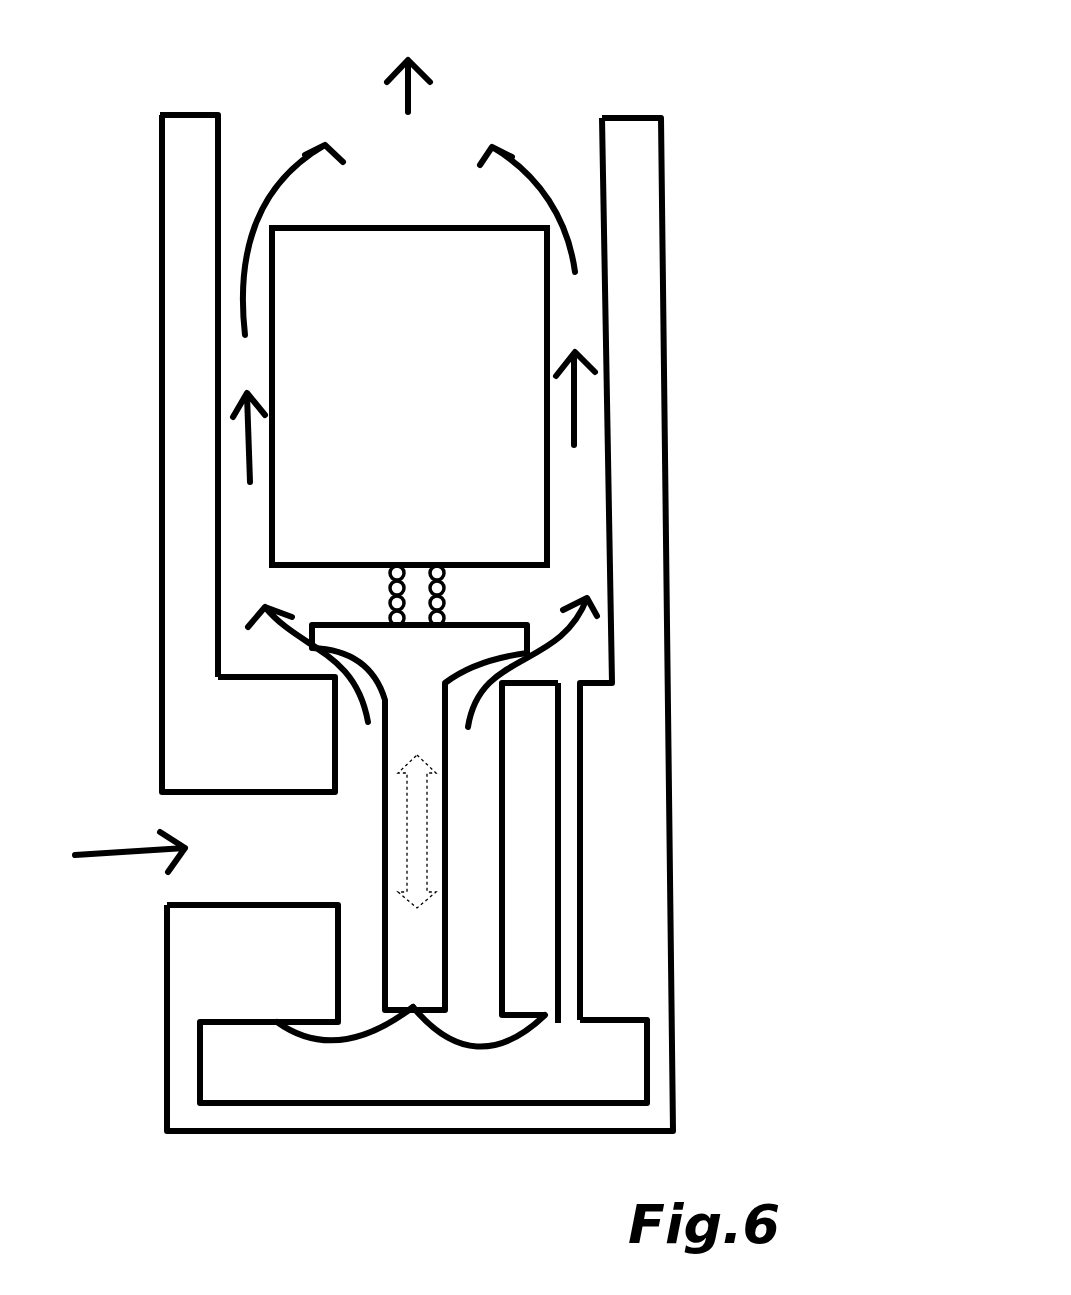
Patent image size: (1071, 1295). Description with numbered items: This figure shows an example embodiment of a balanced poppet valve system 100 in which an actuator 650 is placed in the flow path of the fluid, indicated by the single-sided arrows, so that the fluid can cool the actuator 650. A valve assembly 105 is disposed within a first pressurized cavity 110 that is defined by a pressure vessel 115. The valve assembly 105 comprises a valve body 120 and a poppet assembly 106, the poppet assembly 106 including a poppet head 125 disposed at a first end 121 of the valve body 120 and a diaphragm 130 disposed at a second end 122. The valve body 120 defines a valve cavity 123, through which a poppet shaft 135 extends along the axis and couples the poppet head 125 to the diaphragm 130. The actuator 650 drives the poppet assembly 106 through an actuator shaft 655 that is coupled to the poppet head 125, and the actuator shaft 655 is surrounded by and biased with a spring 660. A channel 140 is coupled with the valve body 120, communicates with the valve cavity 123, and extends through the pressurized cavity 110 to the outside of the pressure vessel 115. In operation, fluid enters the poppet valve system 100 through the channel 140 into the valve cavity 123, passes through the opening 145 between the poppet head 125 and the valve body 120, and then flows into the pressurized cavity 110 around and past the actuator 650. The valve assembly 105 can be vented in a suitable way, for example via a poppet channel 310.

The balanced poppet valve system 100 is at (675, 98).
The first pressurized cavity 110 is at (256, 534).
The pressure vessel 115 is at (167, 1090).
The valve assembly 105 is at (324, 611).
The poppet assembly 106 is at (459, 783).
The valve body 120 is at (565, 892).
The first end 121 is at (563, 680).
The second end 122 is at (258, 1030).
The valve cavity 123 is at (463, 831).
The poppet head 125 is at (533, 630).
The diaphragm 130 is at (430, 1038).
The poppet shaft 135 is at (383, 848).
The channel 140 is at (220, 796).
The opening 145 is at (322, 667).
The poppet channel 310 is at (567, 1020).
The actuator 650 is at (390, 225).
The actuator shaft 655 is at (447, 600).
The spring 660 is at (385, 593).